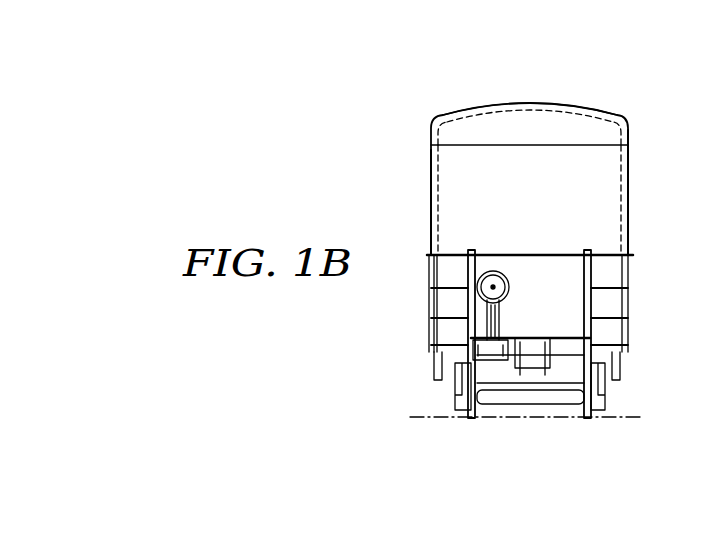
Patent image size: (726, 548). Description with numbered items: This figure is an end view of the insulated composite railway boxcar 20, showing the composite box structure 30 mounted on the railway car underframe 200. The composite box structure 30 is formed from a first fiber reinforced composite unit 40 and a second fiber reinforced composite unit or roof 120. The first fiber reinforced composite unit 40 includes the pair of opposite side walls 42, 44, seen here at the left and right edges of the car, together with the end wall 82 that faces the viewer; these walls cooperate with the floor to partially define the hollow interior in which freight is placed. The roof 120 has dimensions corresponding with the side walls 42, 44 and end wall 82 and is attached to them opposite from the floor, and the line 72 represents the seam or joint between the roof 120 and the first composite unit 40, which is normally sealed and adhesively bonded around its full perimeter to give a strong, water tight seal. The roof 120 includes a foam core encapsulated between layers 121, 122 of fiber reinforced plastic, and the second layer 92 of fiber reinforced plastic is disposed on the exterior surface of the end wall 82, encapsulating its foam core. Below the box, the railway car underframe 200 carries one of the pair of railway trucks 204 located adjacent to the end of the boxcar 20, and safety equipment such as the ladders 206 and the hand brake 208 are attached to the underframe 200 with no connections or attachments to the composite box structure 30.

The composite box structure 30 is at (653, 99).
The second fiber reinforced composite unit or roof 120 is at (576, 103).
The layer of fiber reinforced plastic 122 is at (503, 103).
The layer of fiber reinforced plastic 121 is at (503, 110).
The second layer of fiber reinforced plastic 92 is at (445, 158).
The seam or joint 72 is at (565, 146).
The end wall 82 is at (544, 198).
The side wall 42 is at (431, 207).
The side wall 44 is at (630, 167).
The first fiber reinforced composite unit 40 is at (636, 212).
The insulated composite railway boxcar 20 is at (403, 174).
The ladders 206 is at (432, 300).
The hand brake 208 is at (512, 289).
The railway car underframe 200 is at (427, 359).
The railway truck 204 is at (612, 400).